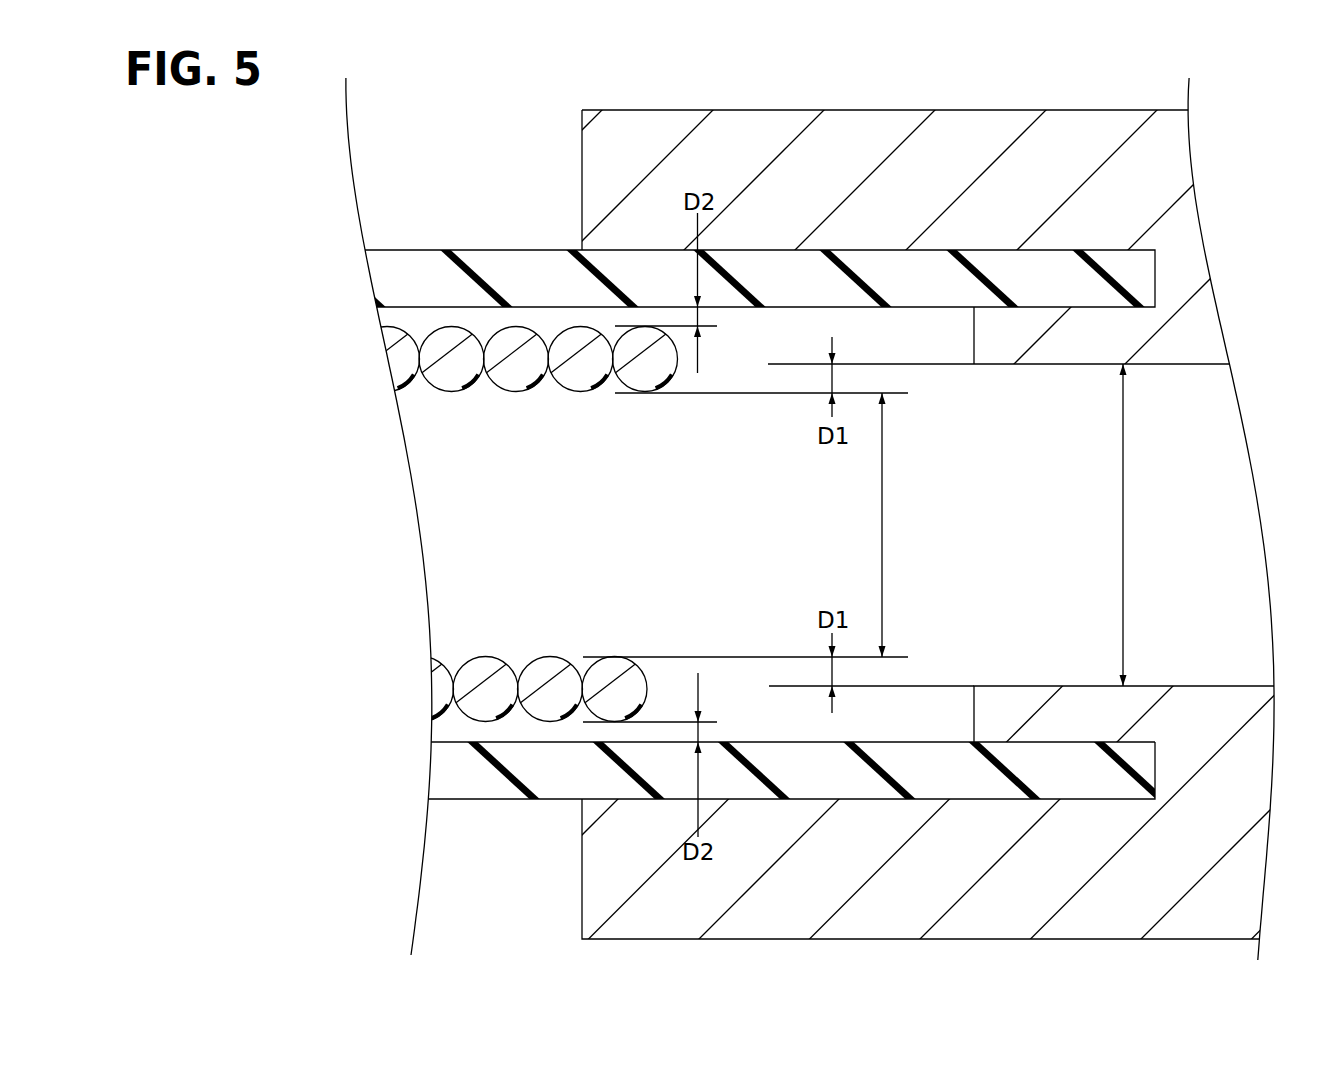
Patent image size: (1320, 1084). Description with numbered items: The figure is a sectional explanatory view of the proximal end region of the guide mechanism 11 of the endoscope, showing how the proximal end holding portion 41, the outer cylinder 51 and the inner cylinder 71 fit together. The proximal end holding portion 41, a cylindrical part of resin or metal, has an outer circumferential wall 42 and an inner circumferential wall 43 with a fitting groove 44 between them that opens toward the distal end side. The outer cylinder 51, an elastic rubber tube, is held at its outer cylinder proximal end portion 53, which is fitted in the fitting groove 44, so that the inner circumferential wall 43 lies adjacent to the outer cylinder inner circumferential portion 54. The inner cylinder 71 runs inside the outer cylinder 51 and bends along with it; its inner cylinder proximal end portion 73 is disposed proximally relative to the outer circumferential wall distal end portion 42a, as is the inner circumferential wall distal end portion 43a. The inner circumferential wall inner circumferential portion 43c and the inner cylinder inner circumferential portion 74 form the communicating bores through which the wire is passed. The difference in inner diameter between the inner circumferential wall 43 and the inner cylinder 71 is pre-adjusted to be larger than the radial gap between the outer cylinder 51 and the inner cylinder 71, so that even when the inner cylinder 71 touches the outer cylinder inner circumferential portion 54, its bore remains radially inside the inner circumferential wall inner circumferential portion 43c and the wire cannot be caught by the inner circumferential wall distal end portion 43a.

The guide mechanism 11 is at (403, 247).
The proximal end holding portion 41 is at (582, 118).
The outer circumferential wall 42 is at (582, 147).
The outer circumferential wall distal end portion 42a is at (582, 205).
The inner circumferential wall 43 is at (1183, 367).
The inner circumferential wall distal end portion 43a is at (974, 343).
The inner circumferential wall inner circumferential portion 43c is at (1144, 525).
The fitting groove 44 is at (974, 312).
The outer cylinder 51 is at (497, 800).
The outer cylinder proximal end portion 53 is at (1155, 741).
The outer cylinder inner circumferential portion 54 is at (868, 741).
The inner cylinder 71 is at (519, 391).
The inner cylinder proximal end portion 73 is at (650, 391).
The inner cylinder inner circumferential portion 74 is at (898, 525).